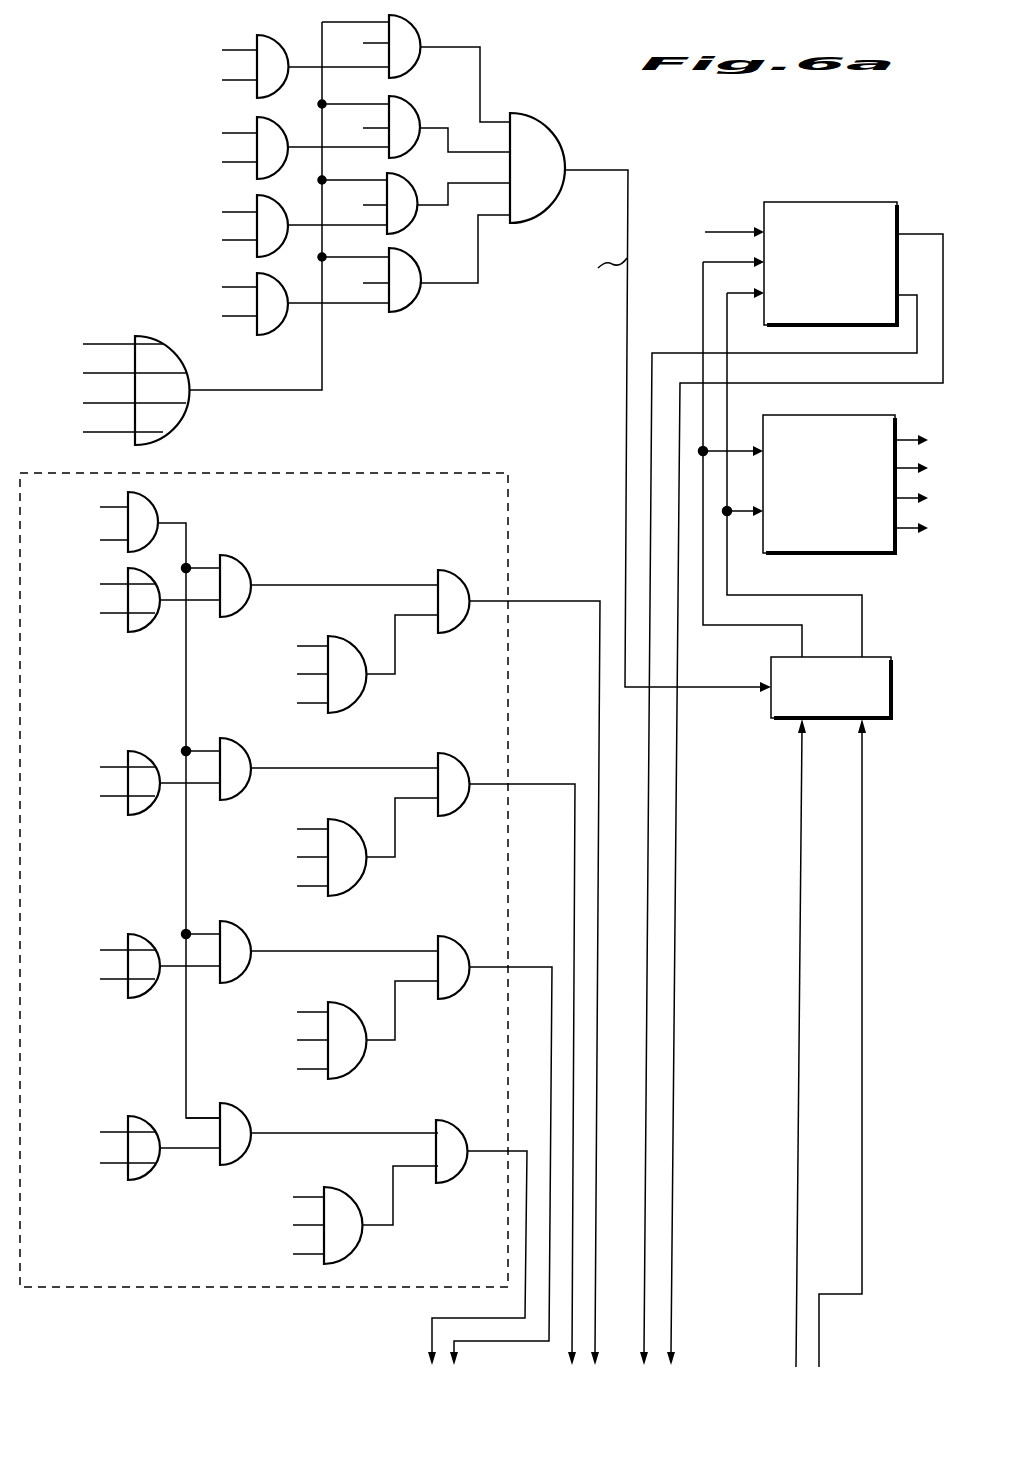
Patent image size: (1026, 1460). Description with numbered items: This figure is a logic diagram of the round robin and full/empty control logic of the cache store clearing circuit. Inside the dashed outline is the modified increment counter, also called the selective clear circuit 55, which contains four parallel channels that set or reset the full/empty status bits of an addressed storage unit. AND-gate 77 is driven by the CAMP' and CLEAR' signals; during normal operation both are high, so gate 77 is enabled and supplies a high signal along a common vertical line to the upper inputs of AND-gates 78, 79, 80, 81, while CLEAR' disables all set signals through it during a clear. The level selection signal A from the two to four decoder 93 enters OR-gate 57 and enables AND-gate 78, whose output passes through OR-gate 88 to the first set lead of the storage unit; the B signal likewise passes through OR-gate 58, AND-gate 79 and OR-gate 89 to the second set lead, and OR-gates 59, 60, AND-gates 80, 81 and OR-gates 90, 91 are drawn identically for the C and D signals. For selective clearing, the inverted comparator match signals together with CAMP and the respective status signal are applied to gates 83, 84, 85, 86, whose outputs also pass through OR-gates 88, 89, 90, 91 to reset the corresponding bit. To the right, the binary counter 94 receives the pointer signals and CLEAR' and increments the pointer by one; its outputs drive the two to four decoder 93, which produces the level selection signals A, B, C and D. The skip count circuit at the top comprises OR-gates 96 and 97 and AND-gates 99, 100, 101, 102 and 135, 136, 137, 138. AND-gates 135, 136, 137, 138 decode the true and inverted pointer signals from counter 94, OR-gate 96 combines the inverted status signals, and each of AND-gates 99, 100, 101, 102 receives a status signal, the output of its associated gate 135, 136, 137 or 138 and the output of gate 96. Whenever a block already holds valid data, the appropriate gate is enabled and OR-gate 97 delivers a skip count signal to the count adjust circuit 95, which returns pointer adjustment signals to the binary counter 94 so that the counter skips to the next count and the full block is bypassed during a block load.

The AND-gate 135 is at (284, 50).
The AND-gate 136 is at (284, 132).
The AND-gate 137 is at (284, 210).
The AND-gate 138 is at (284, 288).
The AND-gate 99 is at (417, 41).
The AND-gate 100 is at (411, 118).
The AND-gate 101 is at (413, 216).
The AND-gate 102 is at (414, 296).
The OR-gate 97 is at (549, 136).
The OR-gate 96 is at (176, 426).
The binary counter 94 is at (866, 203).
The 2 to 4 decoder 93 is at (870, 556).
The count adjust circuit 95 is at (787, 720).
The increment counter 55 is at (462, 473).
The AND-gate 77 is at (150, 498).
The AND-gate 78 is at (230, 560).
The AND-gate 79 is at (247, 758).
The AND gate 80 is at (248, 945).
The AND gate 81 is at (248, 1129).
The OR-gate 57 is at (138, 626).
The OR-gate 58 is at (141, 804).
The AND gate 59 is at (132, 994).
The AND gate 60 is at (140, 1178).
The gate 83 is at (359, 650).
The gate 84 is at (349, 832).
The AND gate 85 is at (347, 1017).
The AND gate 86 is at (345, 1202).
The OR-gate 88 is at (455, 576).
The OR-gate 89 is at (453, 769).
The OR gate 90 is at (456, 957).
The OR gate 91 is at (456, 1144).